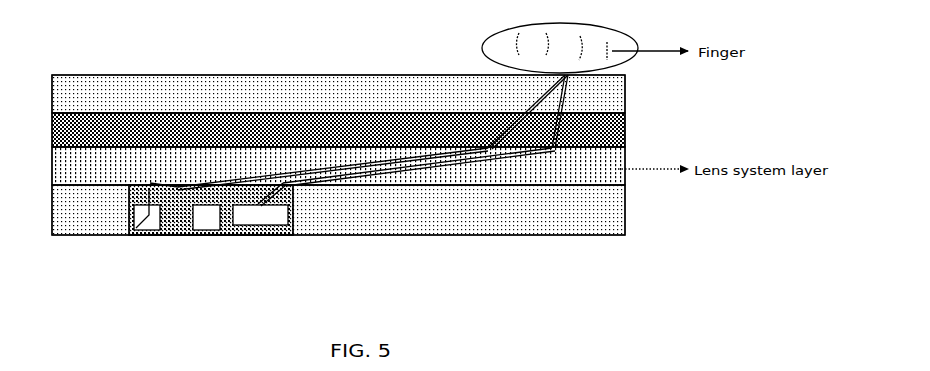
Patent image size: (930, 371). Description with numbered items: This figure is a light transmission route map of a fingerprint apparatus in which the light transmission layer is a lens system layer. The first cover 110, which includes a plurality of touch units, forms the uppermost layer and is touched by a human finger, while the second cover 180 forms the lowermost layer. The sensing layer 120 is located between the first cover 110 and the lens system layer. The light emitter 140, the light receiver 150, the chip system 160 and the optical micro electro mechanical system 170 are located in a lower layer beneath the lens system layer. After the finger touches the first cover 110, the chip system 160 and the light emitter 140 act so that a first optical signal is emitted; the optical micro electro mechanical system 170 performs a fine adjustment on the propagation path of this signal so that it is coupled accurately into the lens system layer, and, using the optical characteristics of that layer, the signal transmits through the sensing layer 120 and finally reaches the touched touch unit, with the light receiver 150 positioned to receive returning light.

The first cover 110 is at (610, 91).
The sensing layer 120 is at (620, 130).
The light emitter 140 is at (135, 232).
The light receiver 150 is at (260, 212).
The chip system 160 is at (208, 232).
The optical micro electro mechanical system 170 is at (178, 188).
The second cover 180 is at (610, 211).